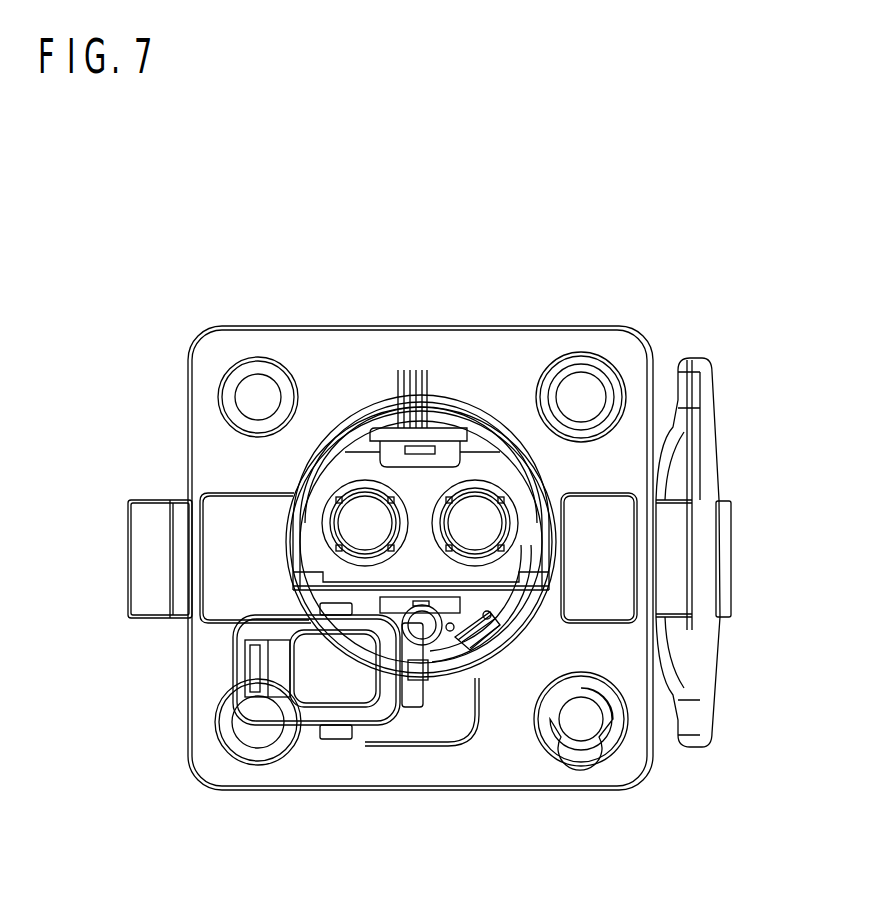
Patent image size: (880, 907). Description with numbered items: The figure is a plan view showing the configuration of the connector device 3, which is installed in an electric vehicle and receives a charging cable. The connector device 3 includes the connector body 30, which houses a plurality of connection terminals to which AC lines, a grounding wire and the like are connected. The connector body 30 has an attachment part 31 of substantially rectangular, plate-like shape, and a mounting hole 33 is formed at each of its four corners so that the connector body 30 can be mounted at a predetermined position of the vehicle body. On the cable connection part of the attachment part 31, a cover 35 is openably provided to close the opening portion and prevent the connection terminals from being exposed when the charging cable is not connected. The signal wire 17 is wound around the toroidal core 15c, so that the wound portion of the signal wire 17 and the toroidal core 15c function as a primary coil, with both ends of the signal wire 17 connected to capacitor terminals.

The connector device 3 is at (255, 290).
The toroidal core 15c is at (444, 690).
The signal wire 17 is at (436, 382).
The connector body 30 is at (541, 322).
The attachment part 31 is at (490, 348).
The mounting hole 33 is at (591, 387).
The cover 35 is at (708, 445).